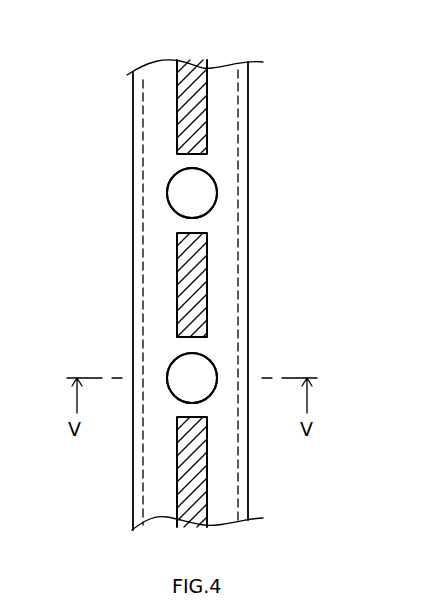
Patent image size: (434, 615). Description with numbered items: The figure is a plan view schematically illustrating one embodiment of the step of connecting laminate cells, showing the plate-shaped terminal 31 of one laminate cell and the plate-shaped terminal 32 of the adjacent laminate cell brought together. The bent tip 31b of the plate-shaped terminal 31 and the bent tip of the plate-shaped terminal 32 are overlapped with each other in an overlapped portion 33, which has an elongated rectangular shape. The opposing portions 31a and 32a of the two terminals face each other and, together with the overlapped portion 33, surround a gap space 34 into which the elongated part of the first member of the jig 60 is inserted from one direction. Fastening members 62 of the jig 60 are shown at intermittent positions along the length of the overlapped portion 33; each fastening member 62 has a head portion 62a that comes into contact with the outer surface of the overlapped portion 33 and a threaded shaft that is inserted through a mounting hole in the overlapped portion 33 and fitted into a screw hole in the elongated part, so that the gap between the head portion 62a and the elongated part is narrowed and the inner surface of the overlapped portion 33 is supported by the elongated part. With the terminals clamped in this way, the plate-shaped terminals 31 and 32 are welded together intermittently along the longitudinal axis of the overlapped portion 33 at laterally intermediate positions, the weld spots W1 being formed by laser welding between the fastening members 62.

The plate-shaped terminal 31 is at (133, 112).
The opposing portion 31a is at (143, 82).
The bent tip 31b is at (163, 512).
The plate-shaped terminal 32 is at (251, 147).
The opposing portion 32a is at (238, 82).
The overlapped portion 33 is at (222, 303).
The gap space 34 is at (225, 526).
The jig 60 is at (168, 163).
The fastening member 62 is at (211, 212).
The head portion 62a is at (208, 176).
The weld spot W1 is at (207, 113).